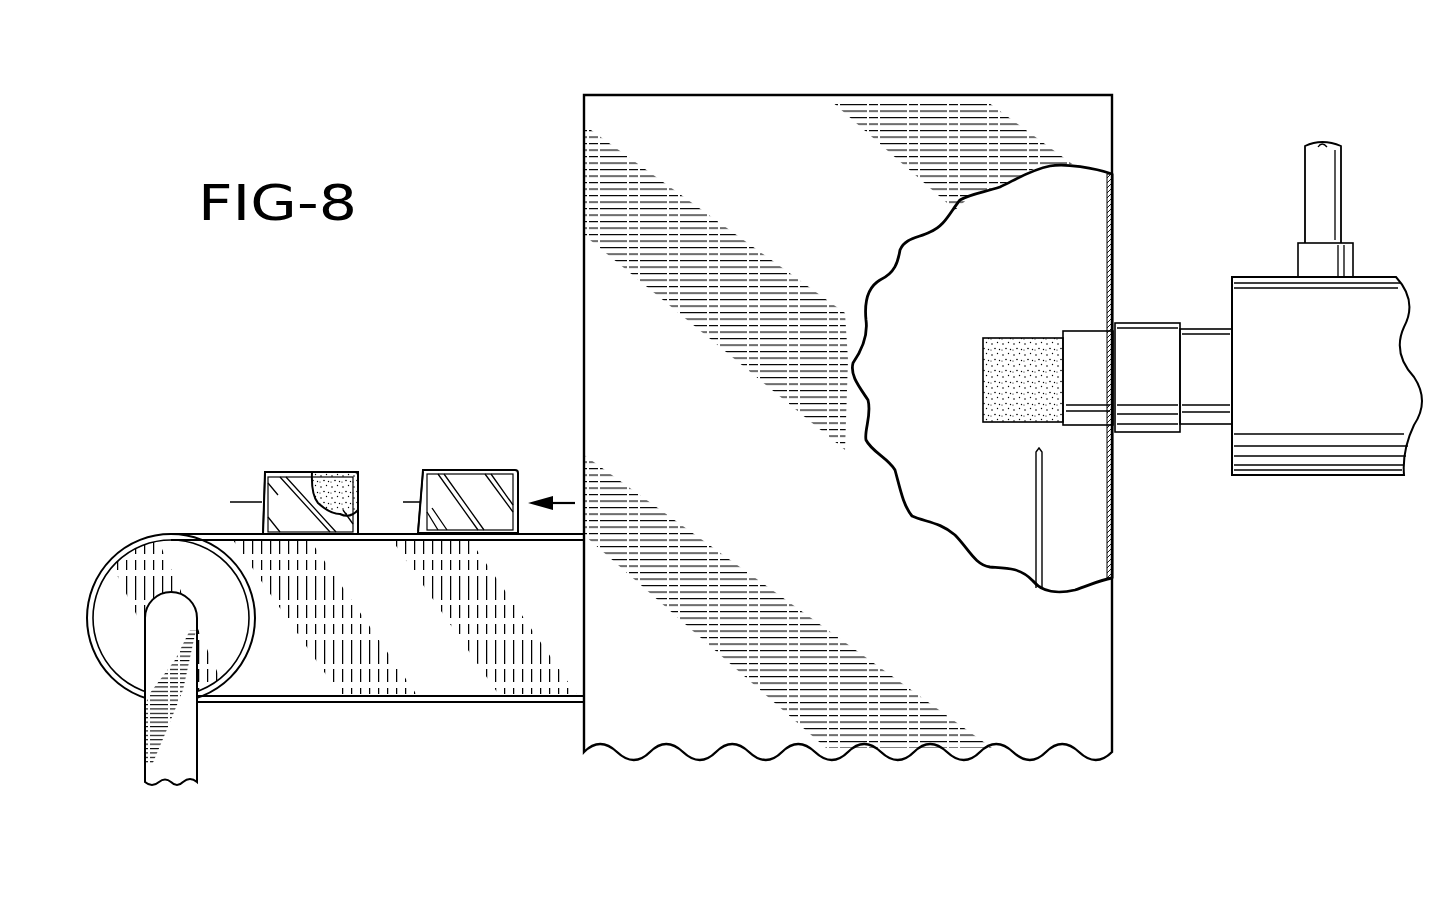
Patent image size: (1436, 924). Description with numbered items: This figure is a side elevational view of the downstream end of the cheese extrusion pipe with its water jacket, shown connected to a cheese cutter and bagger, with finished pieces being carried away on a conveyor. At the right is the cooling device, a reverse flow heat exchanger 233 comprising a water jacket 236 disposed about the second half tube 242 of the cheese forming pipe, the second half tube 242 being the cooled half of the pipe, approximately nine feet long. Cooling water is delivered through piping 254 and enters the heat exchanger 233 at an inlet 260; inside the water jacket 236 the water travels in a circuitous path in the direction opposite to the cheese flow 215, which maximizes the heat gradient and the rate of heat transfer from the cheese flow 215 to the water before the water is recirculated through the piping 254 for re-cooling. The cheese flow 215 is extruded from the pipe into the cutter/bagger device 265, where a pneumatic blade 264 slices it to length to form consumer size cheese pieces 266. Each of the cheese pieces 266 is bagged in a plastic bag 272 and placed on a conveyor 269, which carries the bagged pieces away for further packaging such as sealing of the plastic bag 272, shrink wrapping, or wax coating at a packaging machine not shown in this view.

The cutter/bagger device 265 is at (1052, 82).
The pneumatic blade 264 is at (1036, 488).
The cheese flow 215 is at (1003, 378).
The reverse flow heat exchanger 233 is at (1242, 356).
The second half tube 242 is at (1207, 426).
The water jacket 236 is at (1288, 477).
The inlet 260 is at (1299, 258).
The piping 254 is at (1306, 192).
The conveyor 269 is at (314, 704).
The consumer size cheese pieces 266 is at (335, 462).
The plastic bag 272 is at (255, 500).